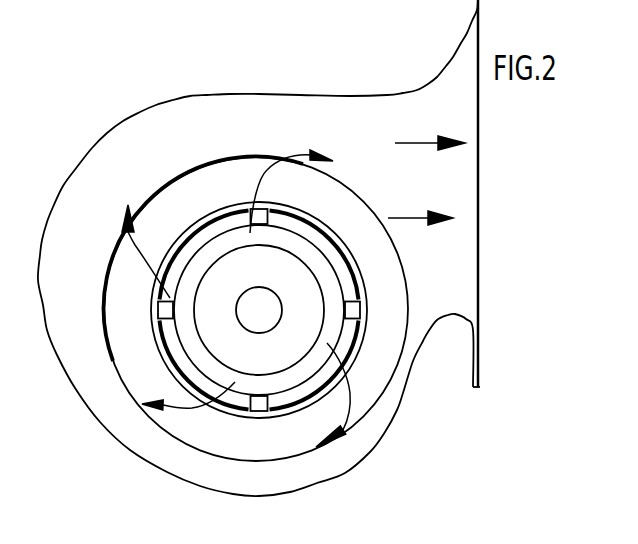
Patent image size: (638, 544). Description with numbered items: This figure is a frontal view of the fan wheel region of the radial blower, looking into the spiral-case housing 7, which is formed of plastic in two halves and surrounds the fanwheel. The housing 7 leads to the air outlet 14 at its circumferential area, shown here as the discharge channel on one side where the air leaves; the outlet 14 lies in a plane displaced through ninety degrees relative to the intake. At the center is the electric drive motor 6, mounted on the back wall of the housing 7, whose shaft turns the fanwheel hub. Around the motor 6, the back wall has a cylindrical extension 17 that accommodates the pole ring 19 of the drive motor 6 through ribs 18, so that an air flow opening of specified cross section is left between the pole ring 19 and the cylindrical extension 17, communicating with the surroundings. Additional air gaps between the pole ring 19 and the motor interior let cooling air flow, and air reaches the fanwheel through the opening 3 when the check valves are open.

The opening 3 is at (180, 358).
The electric drive motor 6 is at (307, 282).
The housing 7 is at (167, 89).
The air outlet 14 is at (466, 286).
The cylindrical extension 17 is at (150, 337).
The ribs 18 is at (260, 210).
The pole ring 19 is at (218, 232).